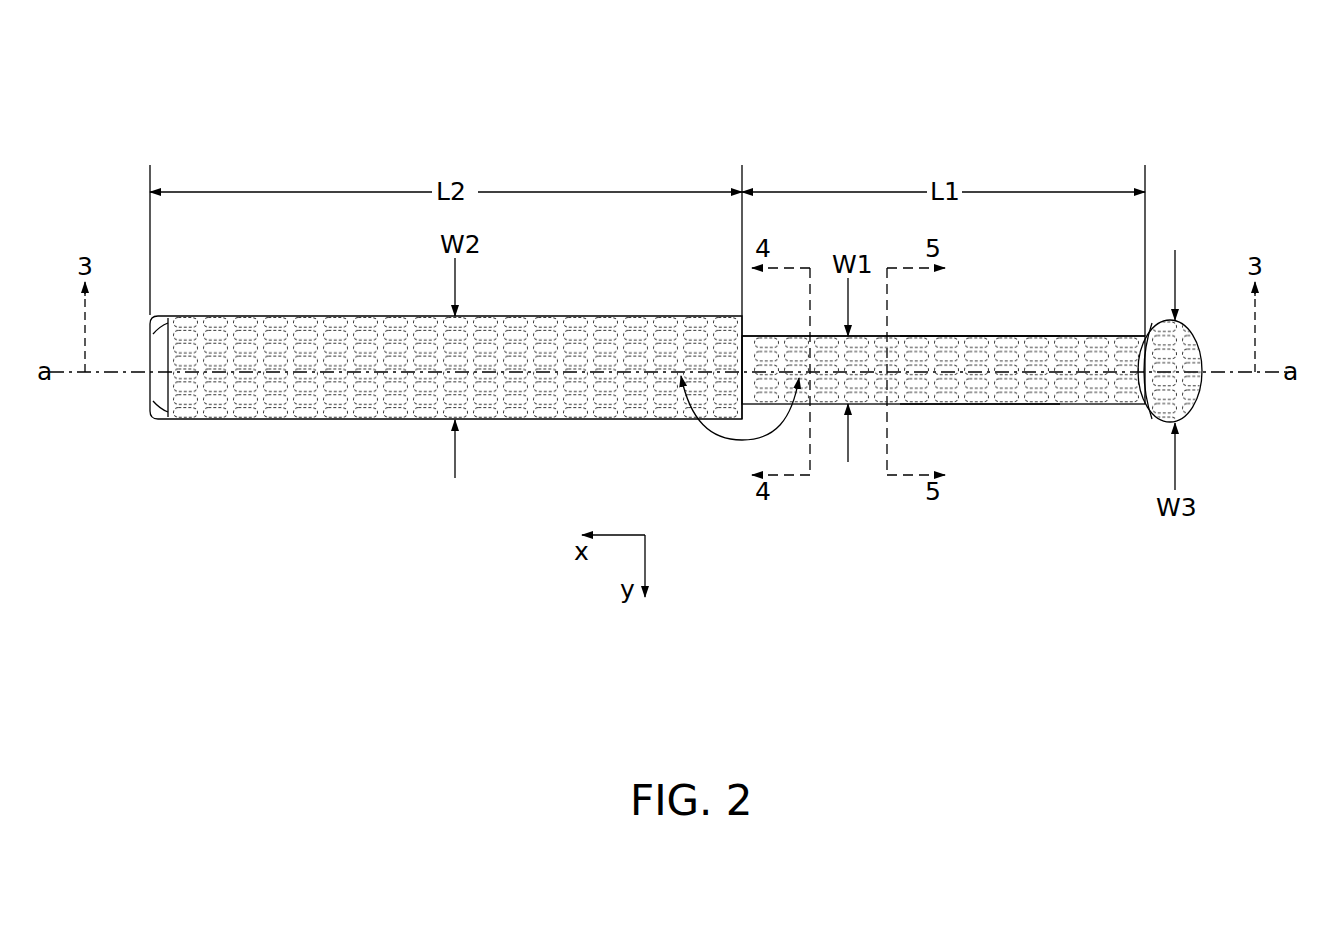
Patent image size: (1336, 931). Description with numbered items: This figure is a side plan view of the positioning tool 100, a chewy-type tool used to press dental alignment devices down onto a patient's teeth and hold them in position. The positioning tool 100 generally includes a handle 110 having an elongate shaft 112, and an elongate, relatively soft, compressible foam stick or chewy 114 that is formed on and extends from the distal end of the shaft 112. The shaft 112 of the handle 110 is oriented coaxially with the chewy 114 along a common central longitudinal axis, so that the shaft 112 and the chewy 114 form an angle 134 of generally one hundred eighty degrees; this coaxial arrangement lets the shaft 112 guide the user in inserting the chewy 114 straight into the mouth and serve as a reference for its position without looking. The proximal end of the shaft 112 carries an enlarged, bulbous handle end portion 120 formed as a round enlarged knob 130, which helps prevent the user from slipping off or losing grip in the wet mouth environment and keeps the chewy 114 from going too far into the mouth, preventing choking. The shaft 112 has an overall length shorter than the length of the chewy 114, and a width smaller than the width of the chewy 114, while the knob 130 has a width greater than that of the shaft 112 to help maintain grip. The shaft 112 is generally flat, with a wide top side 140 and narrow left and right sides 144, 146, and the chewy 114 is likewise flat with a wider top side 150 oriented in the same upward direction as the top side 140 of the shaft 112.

The positioning tool 100 is at (197, 104).
The handle 110 is at (1076, 520).
The elongate shaft 112 is at (1050, 336).
The chewy 114 is at (350, 424).
The handle end portion 120 is at (1185, 316).
The enlarged knob 130 is at (1194, 408).
The angle 134 is at (742, 440).
The top side of the shaft 140 is at (1043, 385).
The left side of the shaft 144 is at (983, 334).
The right side of the shaft 146 is at (983, 407).
The top side of the chewy 150 is at (530, 395).